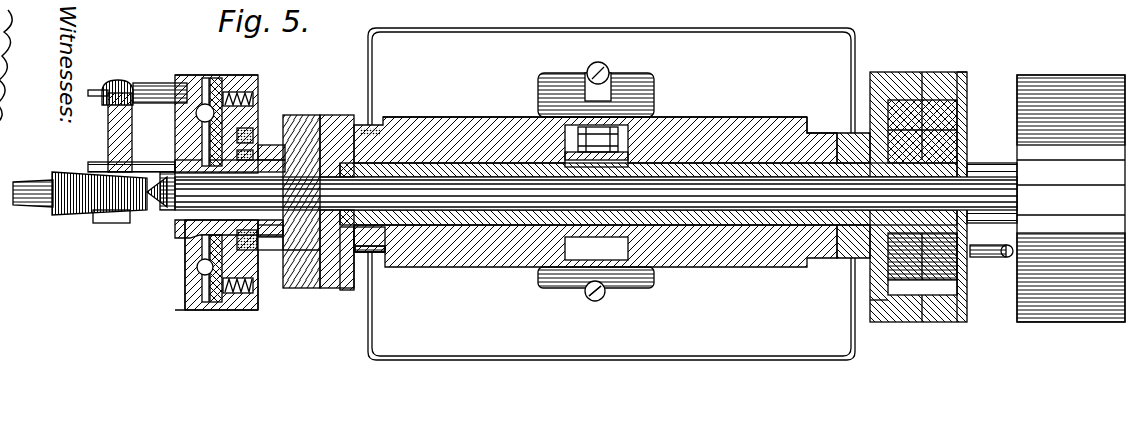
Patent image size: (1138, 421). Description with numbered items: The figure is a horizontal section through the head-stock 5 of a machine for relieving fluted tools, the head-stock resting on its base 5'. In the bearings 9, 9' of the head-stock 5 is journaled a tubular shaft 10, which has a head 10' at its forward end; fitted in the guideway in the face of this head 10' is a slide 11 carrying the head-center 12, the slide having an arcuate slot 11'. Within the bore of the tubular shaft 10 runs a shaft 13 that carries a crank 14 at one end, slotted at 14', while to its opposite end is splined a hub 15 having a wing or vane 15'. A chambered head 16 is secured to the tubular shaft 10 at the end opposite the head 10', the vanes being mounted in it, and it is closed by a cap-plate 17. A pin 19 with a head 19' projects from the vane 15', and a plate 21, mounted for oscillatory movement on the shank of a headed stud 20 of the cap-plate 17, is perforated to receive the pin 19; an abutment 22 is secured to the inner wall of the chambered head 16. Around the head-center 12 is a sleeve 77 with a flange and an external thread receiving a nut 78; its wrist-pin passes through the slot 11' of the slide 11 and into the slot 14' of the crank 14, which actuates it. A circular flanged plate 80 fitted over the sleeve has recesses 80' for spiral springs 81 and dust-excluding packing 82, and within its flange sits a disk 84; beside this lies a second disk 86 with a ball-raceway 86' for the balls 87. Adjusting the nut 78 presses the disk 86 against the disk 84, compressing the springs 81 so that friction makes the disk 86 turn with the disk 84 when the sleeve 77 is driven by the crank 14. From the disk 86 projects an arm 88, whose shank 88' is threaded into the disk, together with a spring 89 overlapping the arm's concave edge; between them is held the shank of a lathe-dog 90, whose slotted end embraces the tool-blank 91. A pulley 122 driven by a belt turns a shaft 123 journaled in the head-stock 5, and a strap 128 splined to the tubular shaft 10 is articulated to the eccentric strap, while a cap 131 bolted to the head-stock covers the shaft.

The head-stock 5 is at (611, 224).
The base of the head-stock 5' is at (611, 80).
The bearing 9 is at (660, 201).
The bearing 9' is at (794, 113).
The tubular shaft 10 is at (595, 102).
The head of the tubular shaft 10' is at (307, 184).
The slide 11 is at (296, 286).
The arcuate slot 11' is at (274, 262).
The head-center 12 is at (127, 225).
The shaft 13 is at (735, 200).
The crank 14 is at (337, 254).
The slot of the crank 14' is at (413, 274).
The hub 15 is at (948, 213).
The wing or vane 15' is at (979, 286).
The chambered head 16 is at (882, 313).
The cap-plate 17 is at (967, 107).
The pin 19 is at (988, 265).
The head of the pin 19' is at (1034, 230).
The headed stud 20 is at (972, 180).
The plate 21 is at (965, 130).
The abutment 22 is at (940, 100).
The sleeve 77 is at (262, 143).
The nut 78 is at (163, 227).
The circular flanged plate 80 is at (221, 301).
The recesses 80' is at (246, 198).
The spiral springs 81 is at (257, 97).
The dust-excluding packing 82 is at (267, 110).
The disk 84 is at (217, 76).
The second disk 86 is at (205, 197).
The ball-raceway 86' is at (171, 156).
The balls 87 is at (200, 137).
The arm 88 is at (89, 112).
The shank of the arm 88' is at (163, 70).
The spring 89 is at (135, 80).
The lathe-dog 90 is at (115, 143).
The tool-blank 91 is at (32, 197).
The pulley 122 is at (1071, 198).
The shaft 123 is at (992, 193).
The strap 128 is at (670, 165).
The cap 131 is at (573, 282).